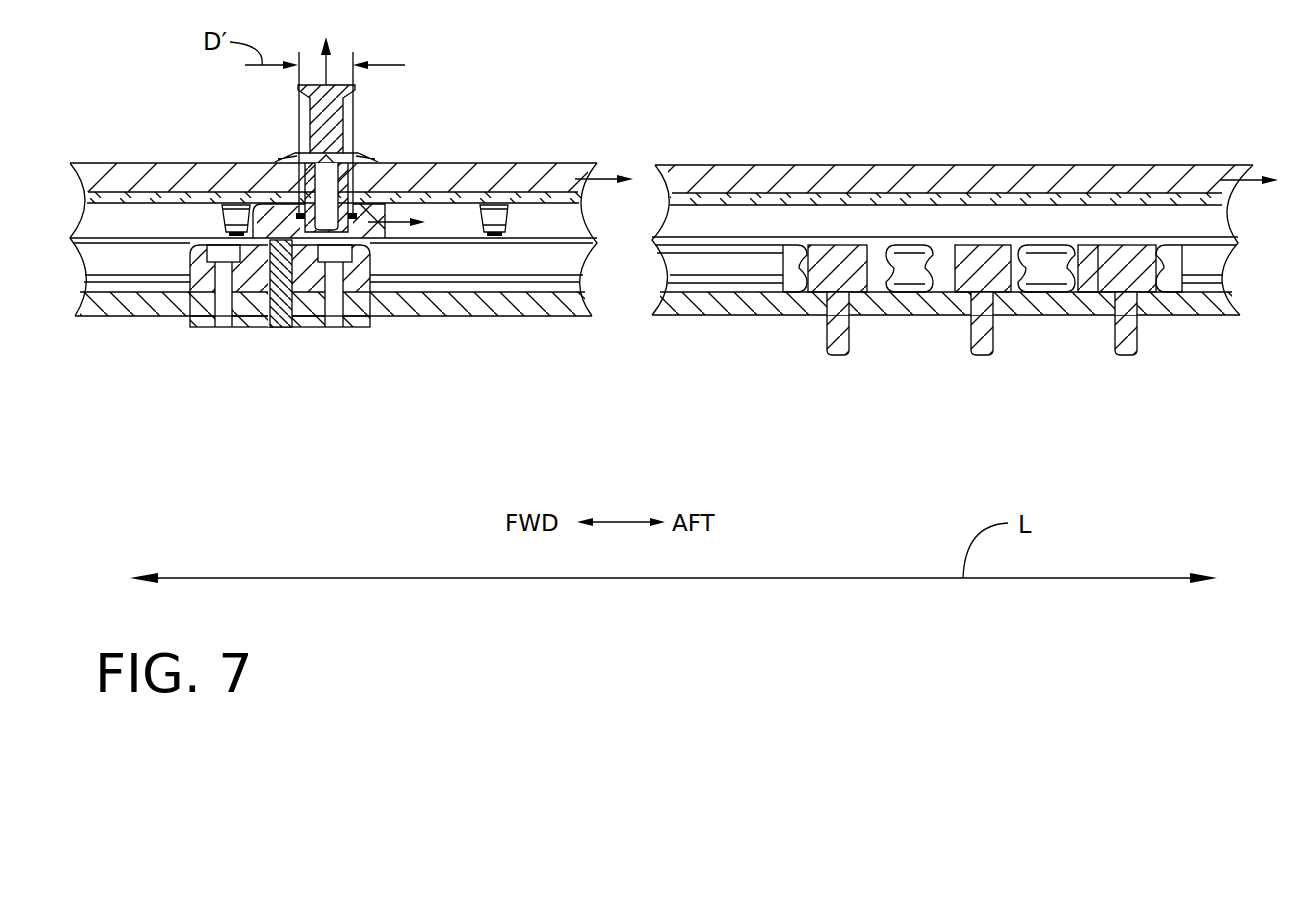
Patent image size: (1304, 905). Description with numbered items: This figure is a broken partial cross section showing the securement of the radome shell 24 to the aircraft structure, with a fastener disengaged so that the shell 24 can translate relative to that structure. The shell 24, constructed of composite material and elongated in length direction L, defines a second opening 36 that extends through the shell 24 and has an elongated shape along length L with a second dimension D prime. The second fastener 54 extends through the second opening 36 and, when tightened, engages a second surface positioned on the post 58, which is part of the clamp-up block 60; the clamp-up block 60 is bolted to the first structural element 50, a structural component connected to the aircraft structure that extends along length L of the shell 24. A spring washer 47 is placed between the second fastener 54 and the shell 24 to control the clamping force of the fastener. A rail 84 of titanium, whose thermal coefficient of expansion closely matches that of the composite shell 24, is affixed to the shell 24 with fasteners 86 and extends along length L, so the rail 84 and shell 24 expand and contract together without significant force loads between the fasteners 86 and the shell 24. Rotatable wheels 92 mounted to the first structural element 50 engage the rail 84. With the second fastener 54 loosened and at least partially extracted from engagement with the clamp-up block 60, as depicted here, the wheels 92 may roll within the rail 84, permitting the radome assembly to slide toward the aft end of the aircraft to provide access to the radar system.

The shell 24 is at (695, 177).
The second opening 36 is at (372, 220).
The spring washer 47 is at (365, 147).
The first structural element 50 is at (158, 303).
The second fastener 54 is at (335, 78).
The post 58 is at (281, 305).
The clamp-up block 60 is at (203, 268).
The rail 84 is at (942, 198).
The fasteners 86 is at (235, 216).
The rotatable wheels 92 is at (802, 257).